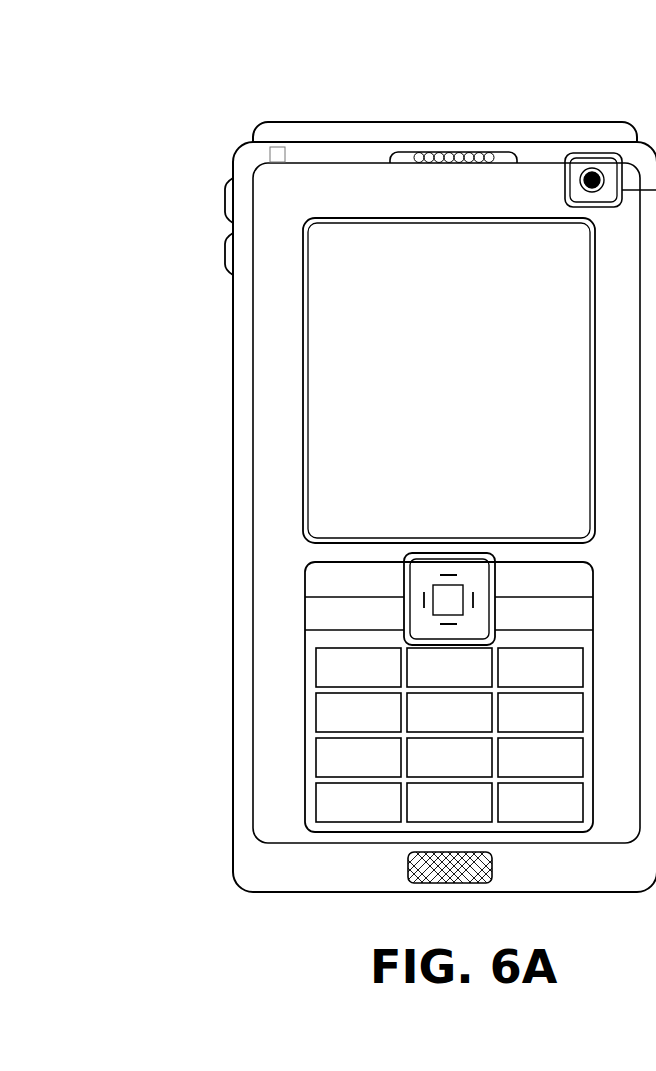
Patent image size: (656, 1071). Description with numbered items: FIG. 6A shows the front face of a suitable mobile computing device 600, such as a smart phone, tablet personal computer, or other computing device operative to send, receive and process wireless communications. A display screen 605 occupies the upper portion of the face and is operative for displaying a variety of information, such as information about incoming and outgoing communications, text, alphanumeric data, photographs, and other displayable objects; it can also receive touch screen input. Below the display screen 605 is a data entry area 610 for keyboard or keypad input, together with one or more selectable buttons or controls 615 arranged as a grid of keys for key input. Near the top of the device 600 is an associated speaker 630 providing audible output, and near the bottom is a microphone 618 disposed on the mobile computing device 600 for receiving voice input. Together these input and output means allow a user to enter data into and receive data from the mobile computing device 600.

The mobile computing device 600 is at (231, 149).
The speaker 630 is at (495, 157).
The display screen 605 is at (342, 362).
The data entry area 610 is at (304, 608).
The selectable buttons or controls 615 is at (330, 712).
The microphone 618 is at (408, 870).